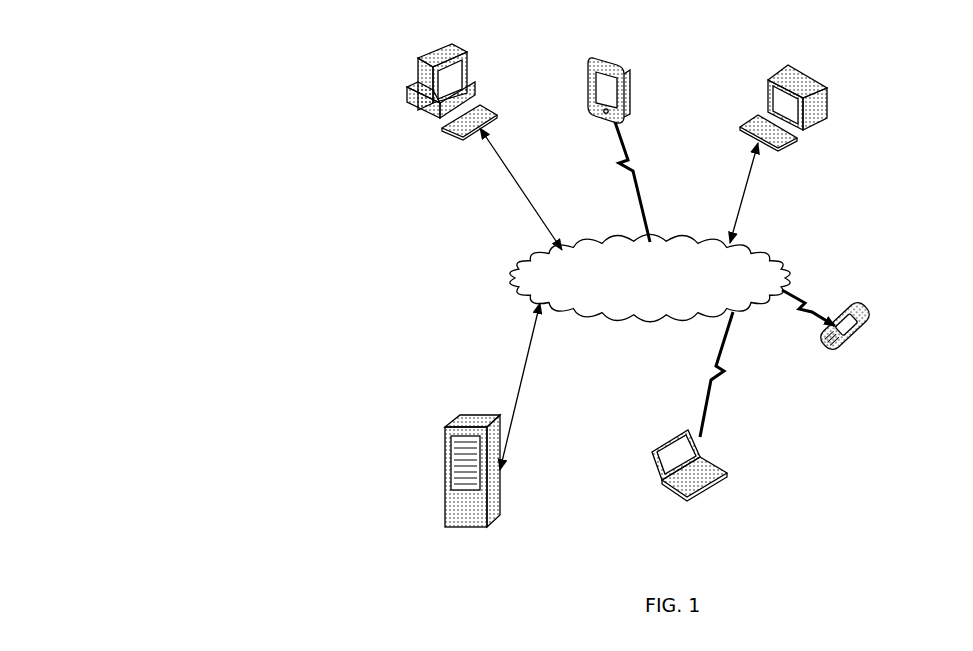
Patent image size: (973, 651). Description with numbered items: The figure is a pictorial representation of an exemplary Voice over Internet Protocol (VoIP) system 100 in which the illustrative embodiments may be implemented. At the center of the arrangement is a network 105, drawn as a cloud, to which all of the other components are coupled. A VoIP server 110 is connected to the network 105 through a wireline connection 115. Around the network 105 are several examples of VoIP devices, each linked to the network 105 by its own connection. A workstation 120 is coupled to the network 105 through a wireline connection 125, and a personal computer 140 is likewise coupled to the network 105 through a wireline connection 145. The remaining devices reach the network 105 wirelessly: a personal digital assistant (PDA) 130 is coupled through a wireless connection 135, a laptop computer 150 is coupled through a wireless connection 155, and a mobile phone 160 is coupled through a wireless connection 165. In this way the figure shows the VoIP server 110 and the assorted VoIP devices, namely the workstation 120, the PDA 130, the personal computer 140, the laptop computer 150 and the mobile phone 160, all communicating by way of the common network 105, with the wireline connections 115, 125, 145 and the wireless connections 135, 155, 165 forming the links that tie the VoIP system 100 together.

The Voice over Internet Protocol (VoIP) system 100 is at (316, 141).
The network 105 is at (785, 263).
The VoIP server 110 is at (477, 416).
The wireline connection 115 is at (533, 370).
The workstation 120 is at (820, 83).
The wireline connection 125 is at (748, 206).
The personal digital assistant (PDA) 130 is at (613, 65).
The wireless connection 135 is at (645, 207).
The personal computer 140 is at (468, 63).
The wireline connection 145 is at (527, 188).
The laptop computer 150 is at (720, 468).
The wireless connection 155 is at (705, 394).
The mobile phone 160 is at (866, 315).
The wireless connection 165 is at (796, 307).